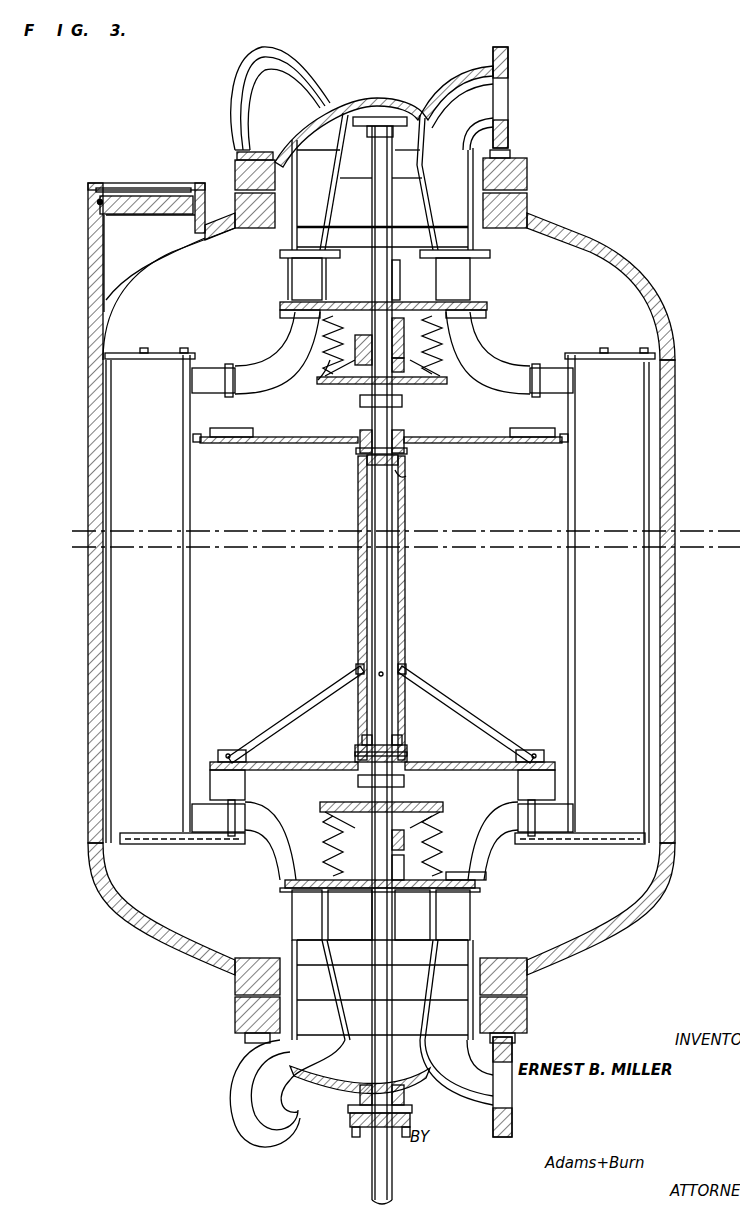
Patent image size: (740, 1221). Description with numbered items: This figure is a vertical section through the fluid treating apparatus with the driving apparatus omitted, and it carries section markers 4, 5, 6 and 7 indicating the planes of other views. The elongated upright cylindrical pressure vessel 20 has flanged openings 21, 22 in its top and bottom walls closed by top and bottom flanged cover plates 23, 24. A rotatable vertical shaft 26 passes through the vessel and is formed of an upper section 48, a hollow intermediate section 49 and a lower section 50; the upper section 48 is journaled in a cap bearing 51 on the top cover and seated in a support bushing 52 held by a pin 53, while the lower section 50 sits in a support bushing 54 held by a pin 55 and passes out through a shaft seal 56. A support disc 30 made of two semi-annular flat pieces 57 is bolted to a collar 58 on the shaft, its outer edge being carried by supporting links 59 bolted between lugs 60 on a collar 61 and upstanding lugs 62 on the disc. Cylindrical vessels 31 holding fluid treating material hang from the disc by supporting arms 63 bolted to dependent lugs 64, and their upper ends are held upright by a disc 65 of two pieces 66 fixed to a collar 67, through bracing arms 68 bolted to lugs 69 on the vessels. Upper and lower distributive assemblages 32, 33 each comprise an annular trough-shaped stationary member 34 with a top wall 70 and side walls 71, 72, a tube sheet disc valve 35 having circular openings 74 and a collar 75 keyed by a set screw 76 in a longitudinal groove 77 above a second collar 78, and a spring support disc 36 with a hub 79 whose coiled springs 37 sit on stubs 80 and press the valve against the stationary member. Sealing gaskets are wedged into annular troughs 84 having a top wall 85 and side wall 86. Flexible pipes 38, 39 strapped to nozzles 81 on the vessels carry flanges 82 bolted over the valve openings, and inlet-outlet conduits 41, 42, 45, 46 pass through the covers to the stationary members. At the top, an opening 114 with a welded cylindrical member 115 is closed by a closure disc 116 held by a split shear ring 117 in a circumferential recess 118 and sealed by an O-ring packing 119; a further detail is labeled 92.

The pressure vessel 20 is at (665, 508).
The top opening 21 is at (275, 228).
The bottom opening 22 is at (284, 960).
The top flanged cover plate 23 is at (388, 110).
The bottom flanged cover plate 24 is at (345, 1095).
The rotatable vertical shaft 26 is at (430, 590).
The support disc 30 is at (456, 760).
The fluid treating material containing cylindrical vessel 31 is at (196, 638).
The upper distributive assemblage 32 is at (552, 298).
The lower distributive assemblage 33 is at (265, 896).
The annular stationary member 34 is at (484, 273).
The tube sheet disc valve 35 is at (350, 300).
The spring support disc 36 is at (447, 386).
The coiled spring 37 is at (322, 380).
The upper flexible pipe 38 is at (262, 360).
The lower flexible pipe 39 is at (272, 840).
The inlet-outlet conduit 41 is at (312, 98).
The inlet-outlet conduit 42 is at (456, 80).
The inlet-outlet conduit 45 is at (258, 1140).
The inlet-outlet conduit 46 is at (474, 1105).
The upper shaft section 48 is at (395, 283).
The intermediate shaft section 49 is at (405, 522).
The lower shaft section 50 is at (392, 940).
The cap bearing 51 is at (356, 114).
The support bushing 52 is at (405, 477).
The pin 53 is at (408, 457).
The support bushing 54 is at (402, 740).
The pin 55 is at (408, 762).
The shaft seal 56 is at (405, 1106).
The semi-annular flat piece 57 is at (294, 772).
The collar 58 is at (356, 748).
The supporting link 59 is at (300, 708).
The lug 60 is at (408, 670).
The collar 61 is at (406, 666).
The upstanding lug 62 is at (222, 750).
The supporting arm 63 is at (180, 844).
The dependent lug 64 is at (244, 792).
The disc 65 is at (470, 430).
The semi-annular flat piece 66 is at (282, 442).
The collar 67 is at (356, 450).
The bracing arm 68 is at (238, 438).
The lug 69 is at (197, 443).
The annular top wall 70 is at (296, 256).
The annular side wall 71 is at (288, 272).
The annular side wall 72 is at (307, 279).
The circular opening 74 is at (478, 300).
The collar 75 is at (352, 350).
The set screw 76 is at (405, 345).
The longitudinal groove 77 is at (398, 282).
The second collar 78 is at (404, 366).
The hub 79 is at (402, 402).
The stub 80 is at (452, 378).
The nozzle 81 is at (200, 368).
The flange 82 is at (290, 320).
The annular trough 84 is at (270, 300).
The annular top wall 85 is at (478, 298).
The annular side wall 86 is at (488, 312).
The bellows coupling 92 is at (501, 333).
The opening 114 is at (182, 252).
The cylindrical member 115 is at (90, 286).
The closure disc 116 is at (126, 214).
The split shear ring 117 is at (108, 196).
The circumferential recess 118 is at (96, 188).
The O-ring packing 119 is at (98, 202).
The section line 4- 4 is at (39, 258).
The section line 5- 5 is at (66, 425).
The section line 6- 6 is at (66, 663).
The section line 7- 7 is at (254, 297).